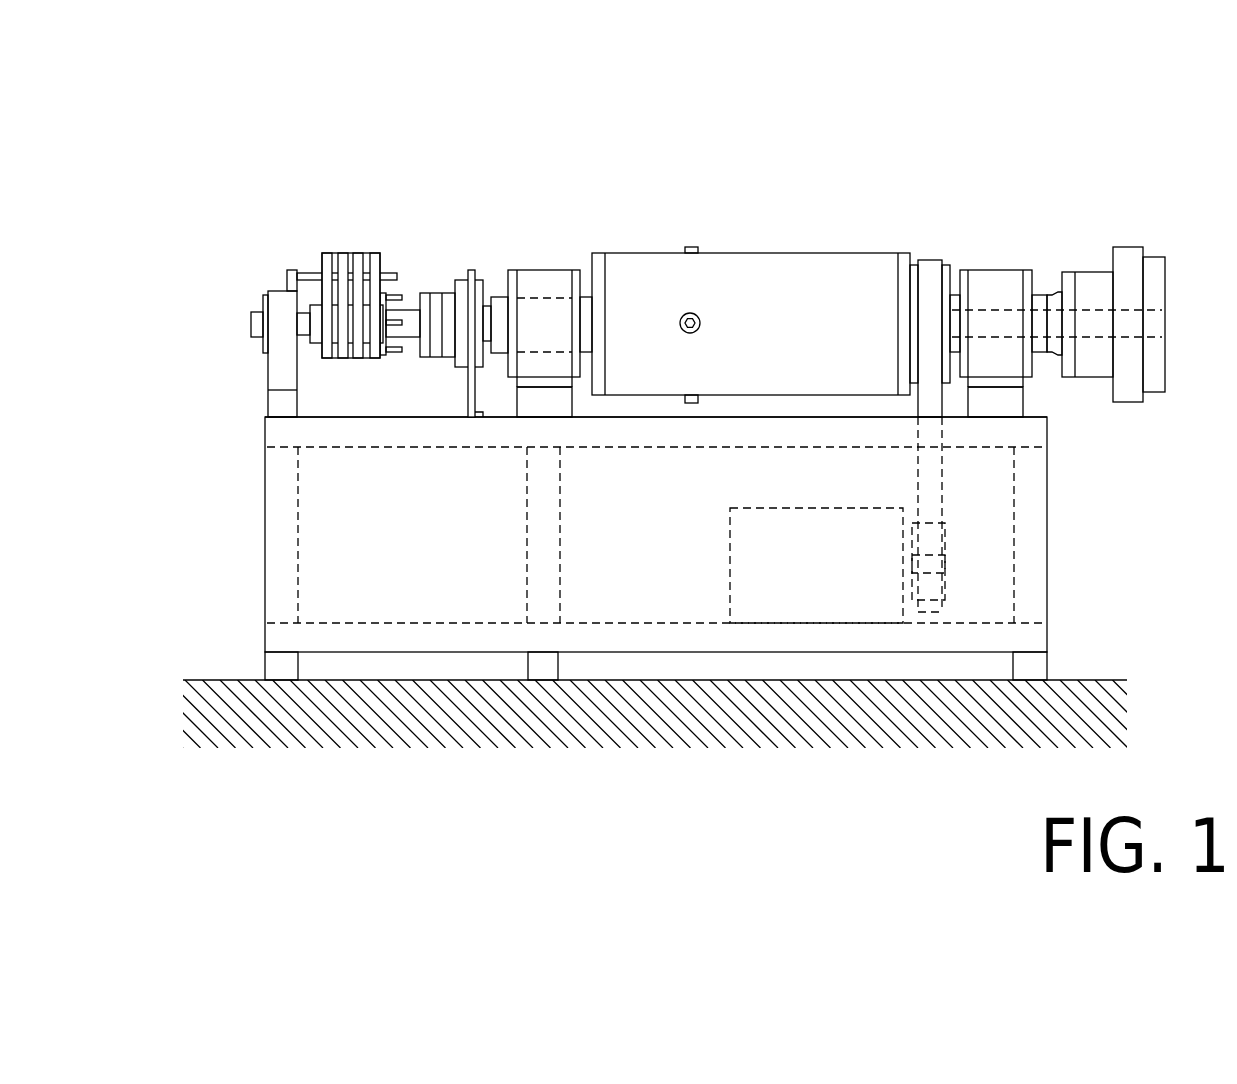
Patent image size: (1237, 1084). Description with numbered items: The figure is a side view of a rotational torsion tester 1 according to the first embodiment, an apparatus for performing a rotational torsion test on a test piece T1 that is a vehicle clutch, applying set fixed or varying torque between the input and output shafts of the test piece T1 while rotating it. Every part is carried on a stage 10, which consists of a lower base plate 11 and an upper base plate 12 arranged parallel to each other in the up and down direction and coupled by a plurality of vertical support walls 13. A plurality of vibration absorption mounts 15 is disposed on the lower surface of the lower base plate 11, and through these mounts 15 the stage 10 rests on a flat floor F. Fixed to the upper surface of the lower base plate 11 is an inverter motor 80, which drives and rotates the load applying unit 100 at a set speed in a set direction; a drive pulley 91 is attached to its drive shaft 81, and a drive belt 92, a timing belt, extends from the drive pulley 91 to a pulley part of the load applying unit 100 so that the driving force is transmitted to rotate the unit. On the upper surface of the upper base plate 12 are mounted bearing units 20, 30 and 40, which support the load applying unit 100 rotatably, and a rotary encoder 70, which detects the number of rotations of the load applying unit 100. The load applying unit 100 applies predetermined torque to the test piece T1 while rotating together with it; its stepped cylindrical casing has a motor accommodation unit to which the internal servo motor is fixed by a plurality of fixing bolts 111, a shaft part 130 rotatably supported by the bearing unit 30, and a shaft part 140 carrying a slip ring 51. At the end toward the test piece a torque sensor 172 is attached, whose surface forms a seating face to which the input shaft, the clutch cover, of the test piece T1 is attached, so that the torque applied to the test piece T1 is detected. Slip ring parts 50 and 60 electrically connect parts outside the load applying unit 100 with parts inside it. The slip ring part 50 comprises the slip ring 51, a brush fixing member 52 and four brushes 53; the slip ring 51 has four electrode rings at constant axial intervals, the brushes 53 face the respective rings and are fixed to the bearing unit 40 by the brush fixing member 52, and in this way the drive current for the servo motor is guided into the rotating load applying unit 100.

The rotational torsion tester 1 is at (1078, 168).
The stage 10 is at (1058, 527).
The lower base plate 11 is at (407, 623).
The upper base plate 12 is at (1035, 416).
The vertical support walls 13 is at (298, 487).
The vibration absorption mounts 15 is at (300, 665).
The bearing unit 20 is at (980, 267).
The bearing unit 30 is at (557, 282).
The bearing unit 40 is at (256, 282).
The slip ring part 50 is at (372, 278).
The slip ring 51 is at (327, 358).
The brush fixing member 52 is at (291, 271).
The brushes 53 is at (327, 253).
The slip ring part 60 is at (250, 335).
The rotary encoder 70 is at (472, 264).
The inverter motor 80 is at (730, 567).
The drive shaft 81 is at (928, 578).
The drive pulley 91 is at (945, 536).
The drive belt 92 is at (918, 460).
The load applying unit 100 is at (751, 266).
The fixing bolts 111 is at (700, 322).
The shaft part 130 is at (556, 294).
The shaft part 140 is at (410, 300).
The torque sensor 172 is at (1095, 272).
The test piece T1 is at (1128, 247).
The floor F is at (1103, 679).